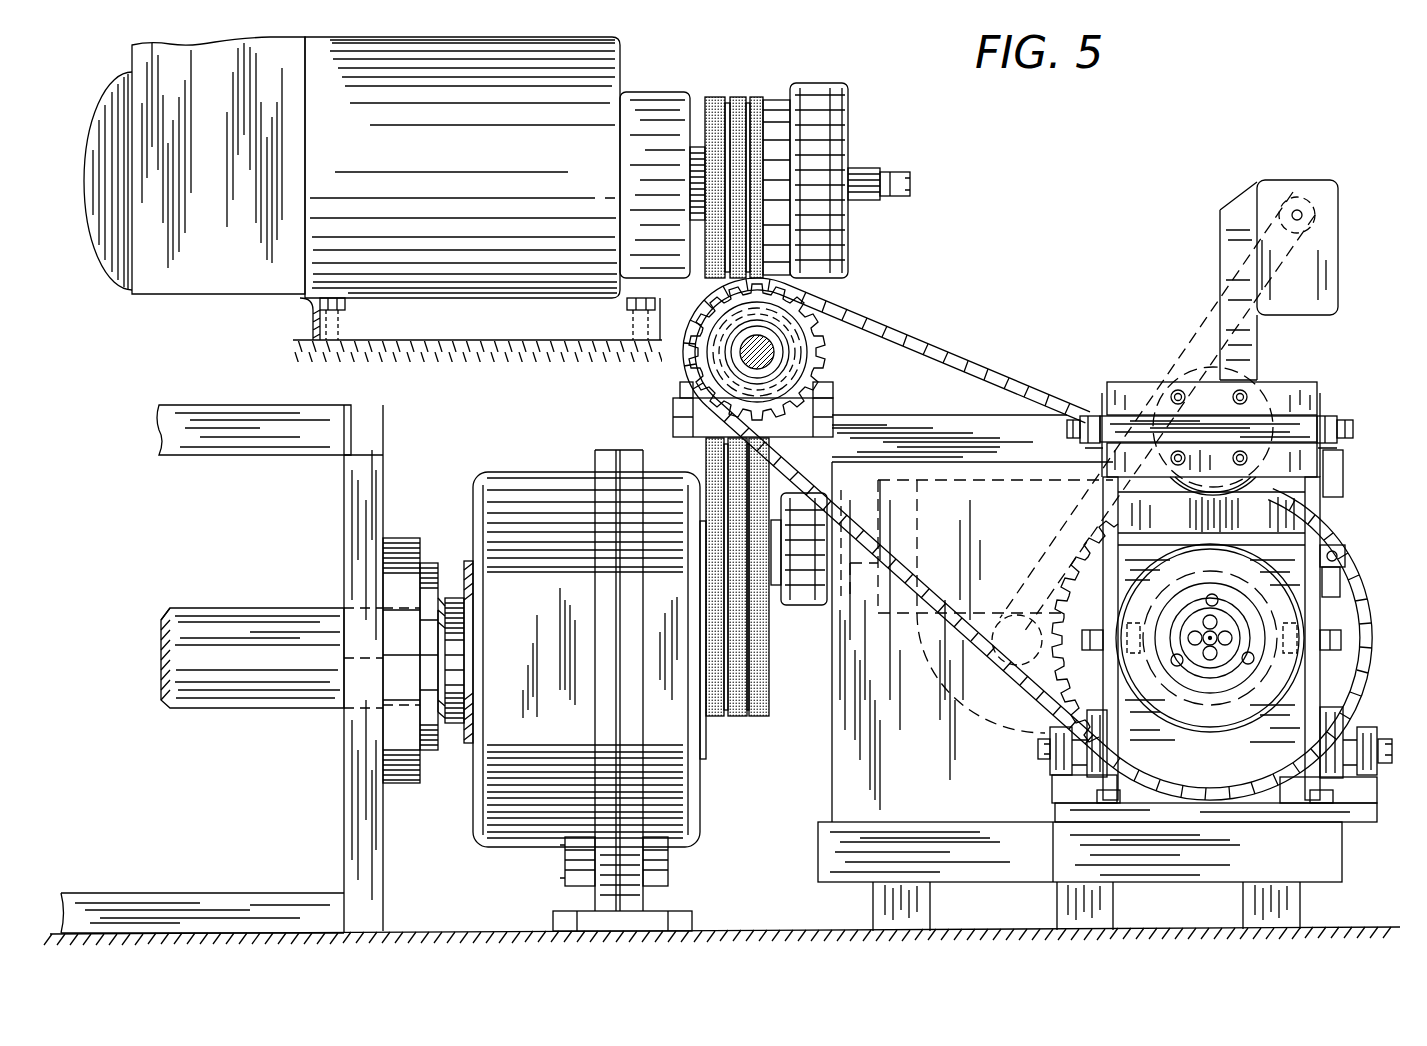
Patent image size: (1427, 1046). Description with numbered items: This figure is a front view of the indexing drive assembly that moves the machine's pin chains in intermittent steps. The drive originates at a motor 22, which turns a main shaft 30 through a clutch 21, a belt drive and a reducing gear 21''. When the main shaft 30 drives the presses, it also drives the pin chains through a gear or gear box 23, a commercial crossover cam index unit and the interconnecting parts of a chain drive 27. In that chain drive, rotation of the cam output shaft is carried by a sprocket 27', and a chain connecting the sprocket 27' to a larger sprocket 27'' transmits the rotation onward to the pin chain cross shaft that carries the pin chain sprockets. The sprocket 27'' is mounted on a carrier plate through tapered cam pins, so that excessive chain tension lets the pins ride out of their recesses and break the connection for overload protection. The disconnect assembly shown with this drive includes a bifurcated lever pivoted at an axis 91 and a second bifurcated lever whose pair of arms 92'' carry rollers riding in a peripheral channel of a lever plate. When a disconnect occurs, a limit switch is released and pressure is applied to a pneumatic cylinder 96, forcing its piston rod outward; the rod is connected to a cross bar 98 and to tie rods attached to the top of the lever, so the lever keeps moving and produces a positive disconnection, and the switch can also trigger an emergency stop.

The clutch 21 is at (836, 179).
The reducing gear 21'' is at (585, 684).
The motor 22 is at (467, 160).
The gear 23 is at (832, 736).
The chain drive 27 is at (1027, 539).
The sprocket 27' is at (781, 360).
The sprocket 27'' is at (1071, 626).
The main shaft 30 is at (232, 612).
The axis 91 is at (1040, 750).
The arms 92'' is at (1211, 655).
The pneumatic cylinder 96 is at (1202, 374).
The cross bar 98 is at (1315, 418).